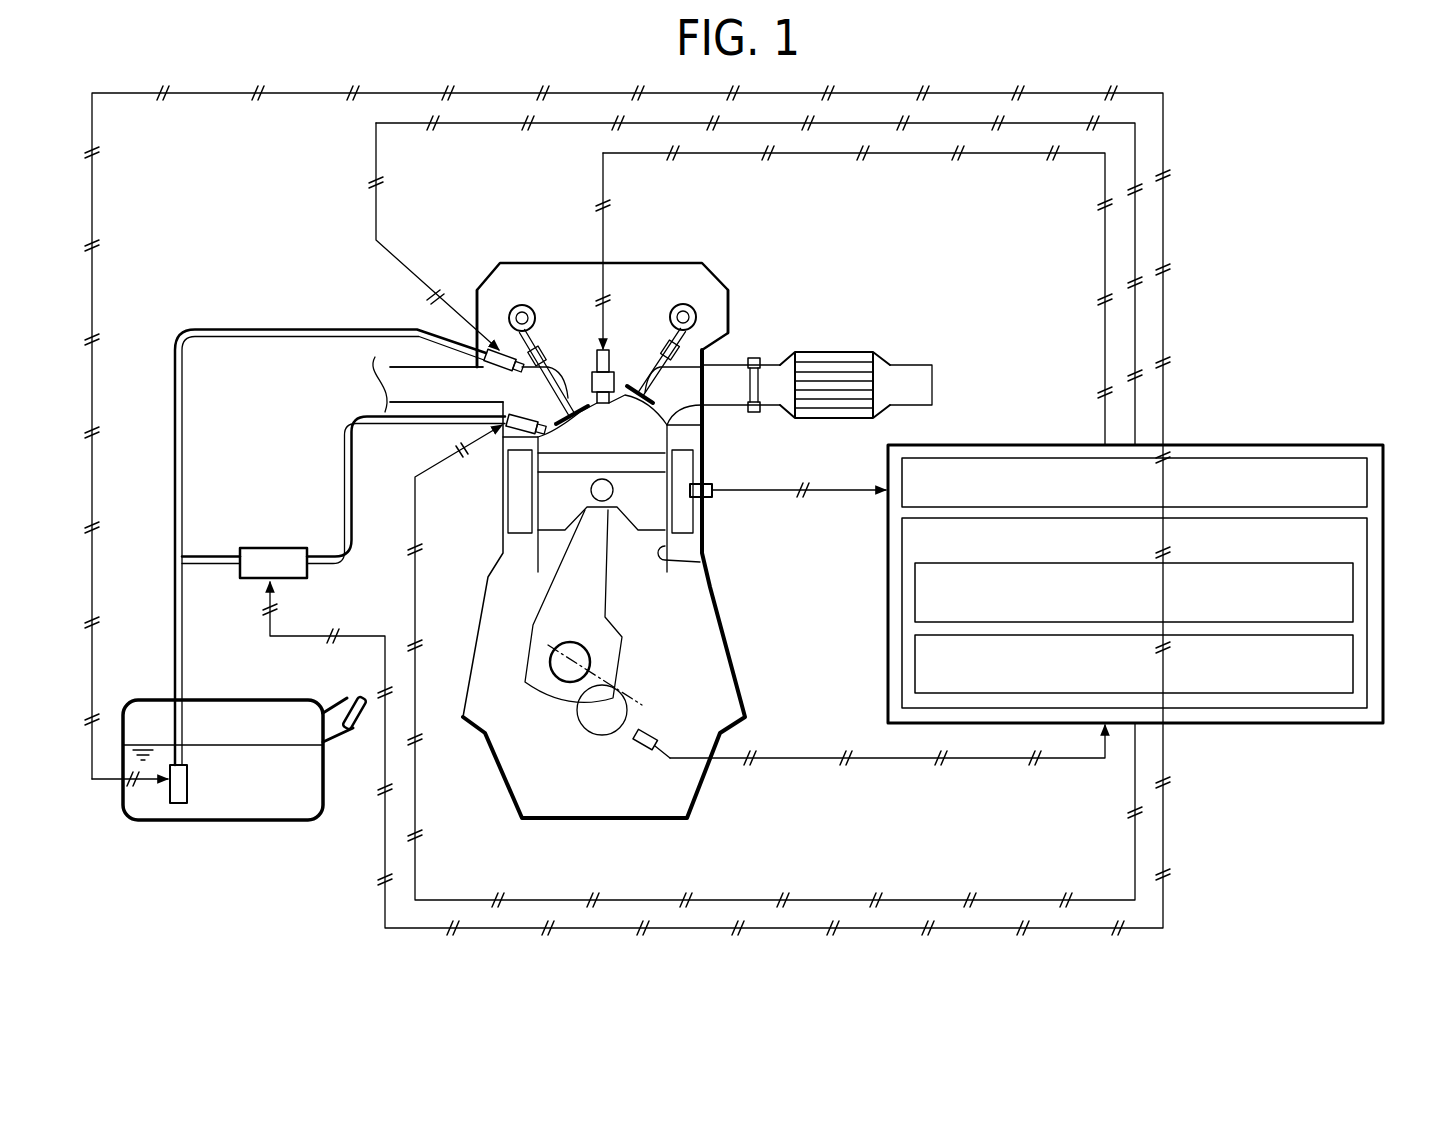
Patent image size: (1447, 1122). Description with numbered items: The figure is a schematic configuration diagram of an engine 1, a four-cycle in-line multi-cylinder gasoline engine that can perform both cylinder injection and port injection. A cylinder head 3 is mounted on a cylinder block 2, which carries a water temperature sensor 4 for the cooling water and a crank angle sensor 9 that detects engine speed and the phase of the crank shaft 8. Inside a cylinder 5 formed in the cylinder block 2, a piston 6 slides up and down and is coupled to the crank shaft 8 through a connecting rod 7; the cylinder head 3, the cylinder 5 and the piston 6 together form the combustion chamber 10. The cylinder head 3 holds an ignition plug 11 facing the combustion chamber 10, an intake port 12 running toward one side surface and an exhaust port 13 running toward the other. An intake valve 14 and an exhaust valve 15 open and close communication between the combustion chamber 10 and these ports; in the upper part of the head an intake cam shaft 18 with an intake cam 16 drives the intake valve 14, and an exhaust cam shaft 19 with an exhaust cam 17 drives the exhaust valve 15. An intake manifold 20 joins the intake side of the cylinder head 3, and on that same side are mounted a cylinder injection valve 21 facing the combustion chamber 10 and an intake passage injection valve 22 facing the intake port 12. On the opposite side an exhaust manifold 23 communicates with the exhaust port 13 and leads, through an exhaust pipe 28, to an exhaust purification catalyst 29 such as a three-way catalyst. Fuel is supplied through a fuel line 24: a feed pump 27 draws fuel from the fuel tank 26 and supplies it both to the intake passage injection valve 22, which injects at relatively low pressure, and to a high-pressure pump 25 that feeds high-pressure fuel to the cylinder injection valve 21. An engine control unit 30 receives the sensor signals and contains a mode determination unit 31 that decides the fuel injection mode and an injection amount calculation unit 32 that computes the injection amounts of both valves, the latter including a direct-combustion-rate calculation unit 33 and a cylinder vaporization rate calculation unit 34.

The engine 1 is at (818, 228).
The cylinder block 2 is at (735, 638).
The cylinder head 3 is at (693, 417).
The water temperature sensor 4 is at (712, 496).
The cylinder 5 is at (700, 562).
The piston 6 is at (553, 497).
The connecting rod 7 is at (563, 620).
The crank shaft 8 is at (602, 735).
The crank angle sensor 9 is at (652, 748).
The combustion chamber 10 is at (638, 446).
The ignition plug 11 is at (595, 327).
The intake port 12 is at (545, 400).
The exhaust port 13 is at (693, 400).
The intake valve 14 is at (572, 340).
The exhaust valve 15 is at (635, 330).
The intake cam 16 is at (480, 295).
The exhaust cam 17 is at (688, 293).
The intake cam shaft 18 is at (508, 305).
The exhaust cam shaft 19 is at (720, 297).
The intake manifold 20 is at (458, 403).
The cylinder injection valve 21 is at (523, 430).
The intake passage injection valve 22 is at (482, 360).
The exhaust manifold 23 is at (748, 362).
The fuel line 24 is at (185, 420).
The high-pressure pump 25 is at (270, 548).
The fuel tank 26 is at (236, 699).
The feed pump 27 is at (177, 804).
The exhaust pipe 28 is at (772, 407).
The exhaust purification catalyst 29 is at (848, 352).
The engine control unit 30 is at (1167, 552).
The mode determination unit 31 is at (1367, 480).
The injection amount calculation unit 32 is at (1367, 542).
The direct-combustion-rate calculation unit 33 is at (1353, 590).
The cylinder vaporization rate calculation unit 34 is at (1353, 664).